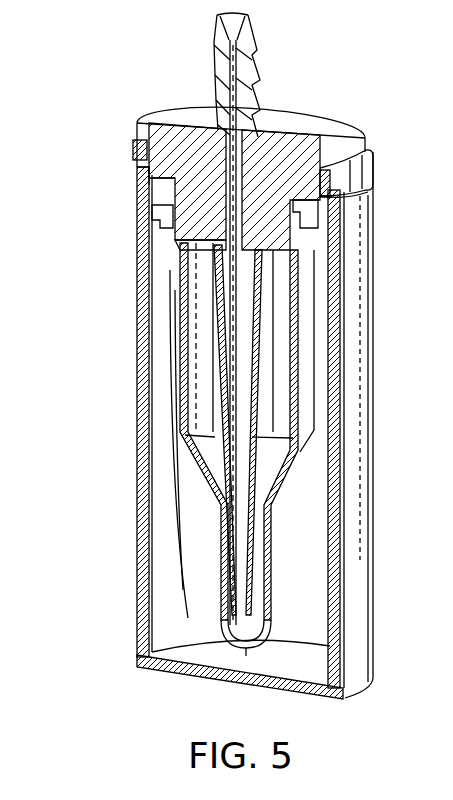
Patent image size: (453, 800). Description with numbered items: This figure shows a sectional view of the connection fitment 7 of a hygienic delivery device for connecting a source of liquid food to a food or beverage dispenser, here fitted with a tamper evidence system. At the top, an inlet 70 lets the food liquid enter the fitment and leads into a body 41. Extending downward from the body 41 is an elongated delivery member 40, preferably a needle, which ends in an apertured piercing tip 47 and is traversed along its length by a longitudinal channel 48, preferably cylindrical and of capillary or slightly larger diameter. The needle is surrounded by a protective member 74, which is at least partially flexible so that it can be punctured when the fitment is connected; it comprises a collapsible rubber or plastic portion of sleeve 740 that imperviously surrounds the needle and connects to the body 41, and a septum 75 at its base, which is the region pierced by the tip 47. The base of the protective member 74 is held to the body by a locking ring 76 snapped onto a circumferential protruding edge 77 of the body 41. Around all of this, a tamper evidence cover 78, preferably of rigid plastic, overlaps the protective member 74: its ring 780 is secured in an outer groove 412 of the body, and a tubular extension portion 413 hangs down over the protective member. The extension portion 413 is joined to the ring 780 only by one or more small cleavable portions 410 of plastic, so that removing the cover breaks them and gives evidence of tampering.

The connection fitment 7 is at (88, 404).
The elongated delivery member 40 is at (265, 406).
The body 41 is at (350, 130).
The apertured piercing tip 47 is at (256, 650).
The longitudinal channel 48 is at (262, 349).
The inlet 70 is at (250, 26).
The protective member 74 is at (283, 478).
The septum 75 is at (217, 672).
The locking ring 76 is at (320, 264).
The circumferential protruding edge 77 is at (150, 217).
The tamper evidence cover 78 is at (138, 546).
The cleavable portions 410 is at (362, 188).
The outer groove 412 is at (150, 143).
The extension portion 413 is at (135, 184).
The collapsible portion of sleeve 740 is at (140, 446).
The ring 780 is at (363, 169).